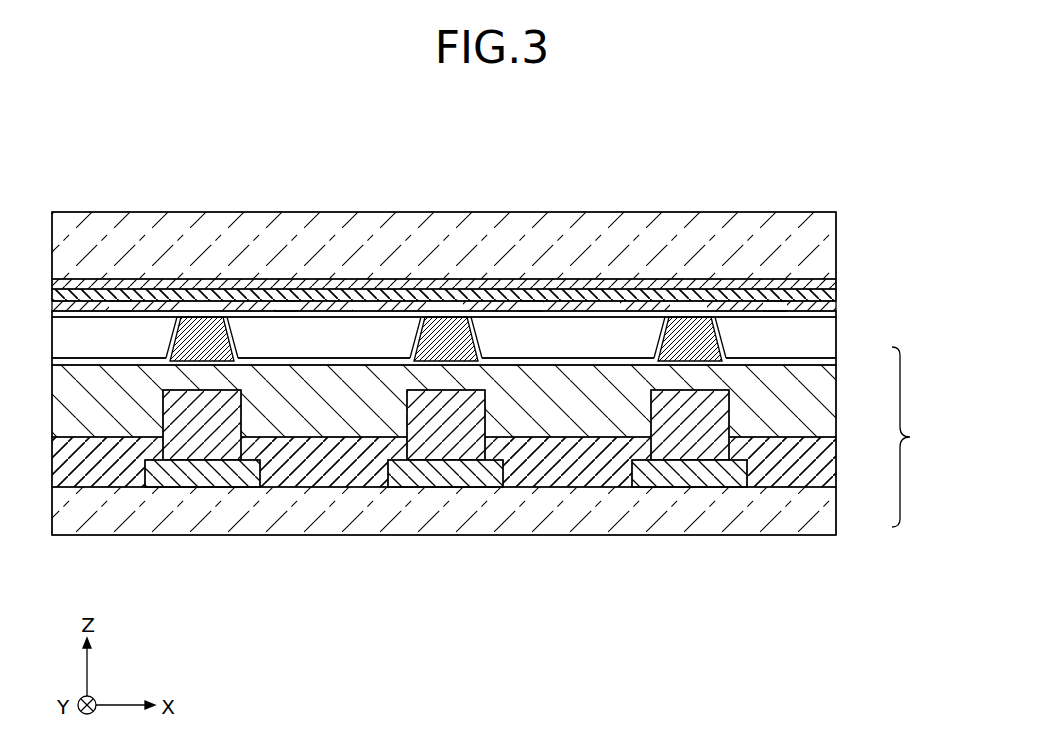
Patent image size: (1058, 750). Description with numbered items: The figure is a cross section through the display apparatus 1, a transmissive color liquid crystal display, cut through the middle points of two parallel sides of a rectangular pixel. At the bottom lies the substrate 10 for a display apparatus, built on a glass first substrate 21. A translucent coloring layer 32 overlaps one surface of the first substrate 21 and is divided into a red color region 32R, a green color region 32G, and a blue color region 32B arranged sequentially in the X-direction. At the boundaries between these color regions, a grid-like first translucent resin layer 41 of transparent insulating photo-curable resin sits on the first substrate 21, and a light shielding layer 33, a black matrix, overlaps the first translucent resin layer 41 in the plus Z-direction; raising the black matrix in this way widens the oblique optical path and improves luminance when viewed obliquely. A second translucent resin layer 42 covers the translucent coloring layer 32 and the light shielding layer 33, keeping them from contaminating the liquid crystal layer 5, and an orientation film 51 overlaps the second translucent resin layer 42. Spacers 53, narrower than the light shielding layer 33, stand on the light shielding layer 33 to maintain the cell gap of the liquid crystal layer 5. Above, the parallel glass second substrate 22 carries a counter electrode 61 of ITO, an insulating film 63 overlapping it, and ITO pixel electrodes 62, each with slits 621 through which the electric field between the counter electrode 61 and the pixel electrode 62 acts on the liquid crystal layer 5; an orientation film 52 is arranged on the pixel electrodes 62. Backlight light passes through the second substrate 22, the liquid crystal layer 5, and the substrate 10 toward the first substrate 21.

The display apparatus 1 is at (822, 162).
The substrate for a display apparatus 10 is at (921, 437).
The first substrate 21 is at (818, 510).
The second substrate 22 is at (818, 231).
The translucent coloring layer 32 is at (818, 460).
The color region 32R is at (112, 458).
The color region 32G is at (326, 460).
The color region 32B is at (575, 460).
The light shielding layer 33 is at (200, 415).
The first translucent resin layer 41 is at (202, 463).
The second translucent resin layer 42 is at (818, 402).
The liquid crystal layer 5 is at (818, 345).
The orientation film 51 is at (818, 361).
The orientation film 52 is at (818, 314).
The spacer 53 is at (203, 340).
The counter electrode 61 is at (818, 284).
The pixel electrode 62 is at (78, 304).
The slit 621 is at (290, 304).
The insulating film 63 is at (818, 296).